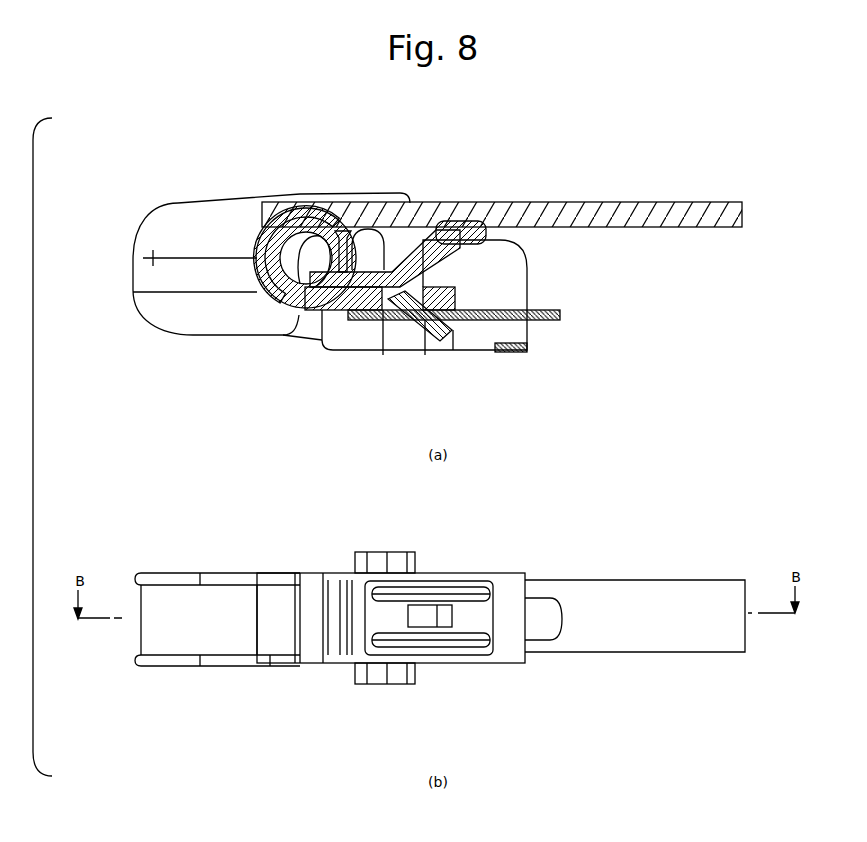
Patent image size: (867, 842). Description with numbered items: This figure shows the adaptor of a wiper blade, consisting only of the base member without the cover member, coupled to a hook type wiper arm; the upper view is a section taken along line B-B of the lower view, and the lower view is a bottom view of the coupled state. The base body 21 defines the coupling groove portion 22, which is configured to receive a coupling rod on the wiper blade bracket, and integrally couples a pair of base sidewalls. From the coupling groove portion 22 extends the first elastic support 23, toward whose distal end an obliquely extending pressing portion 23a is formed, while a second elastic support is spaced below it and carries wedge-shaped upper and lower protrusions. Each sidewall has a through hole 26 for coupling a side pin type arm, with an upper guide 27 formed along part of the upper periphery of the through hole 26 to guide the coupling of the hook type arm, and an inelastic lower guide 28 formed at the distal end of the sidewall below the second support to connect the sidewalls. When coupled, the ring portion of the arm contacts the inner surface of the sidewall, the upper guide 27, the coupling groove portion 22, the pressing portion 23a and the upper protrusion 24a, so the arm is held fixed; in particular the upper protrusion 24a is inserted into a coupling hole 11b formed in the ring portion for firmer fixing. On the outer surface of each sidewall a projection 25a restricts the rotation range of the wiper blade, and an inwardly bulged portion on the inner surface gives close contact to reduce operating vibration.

The coupling hole 11b is at (386, 312).
The base body 21 is at (296, 236).
The coupling groove portion 22 is at (317, 266).
The first elastic support 23 is at (368, 252).
The pressing portion 23a is at (458, 226).
The upper protrusion 24a is at (428, 340).
The projection 25a is at (397, 555).
The through hole 26 is at (405, 250).
The upper guide 27 is at (343, 238).
The lower guide 28 is at (510, 354).